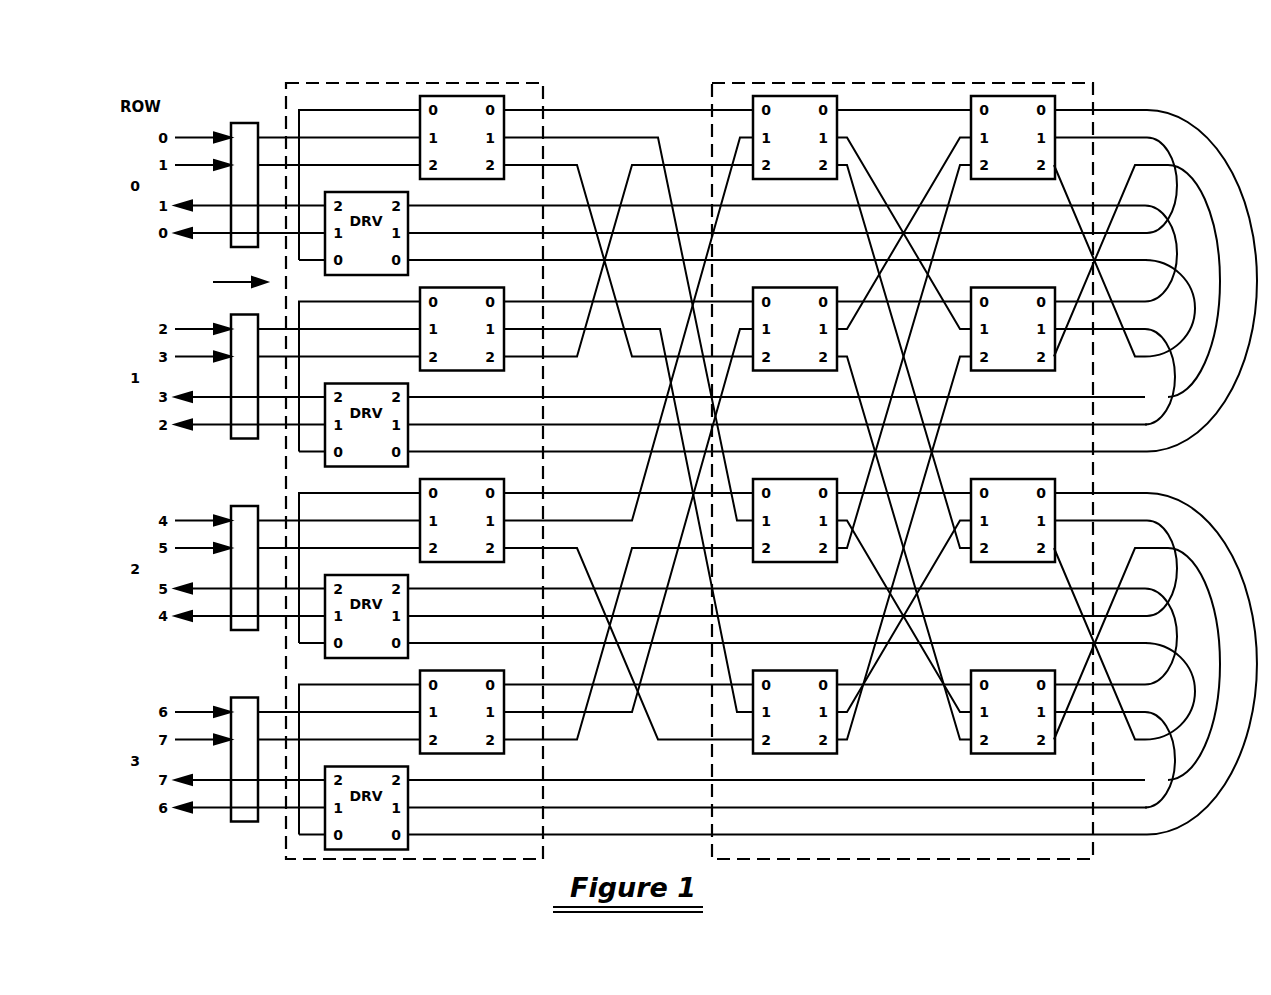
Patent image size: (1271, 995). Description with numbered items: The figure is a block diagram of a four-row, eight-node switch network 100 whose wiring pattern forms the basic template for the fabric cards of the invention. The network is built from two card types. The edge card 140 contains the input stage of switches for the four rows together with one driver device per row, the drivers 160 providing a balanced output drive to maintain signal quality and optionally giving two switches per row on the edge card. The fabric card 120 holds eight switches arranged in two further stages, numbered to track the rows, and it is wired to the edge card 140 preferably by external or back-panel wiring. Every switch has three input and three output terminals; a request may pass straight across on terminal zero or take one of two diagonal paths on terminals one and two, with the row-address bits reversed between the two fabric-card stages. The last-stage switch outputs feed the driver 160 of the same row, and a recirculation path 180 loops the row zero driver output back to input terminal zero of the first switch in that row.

The switch network 100 is at (706, 71).
The fabric card 120 is at (830, 872).
The edge card 140 is at (467, 874).
The output driver 160 is at (340, 878).
The recirculation path 180 is at (368, 107).